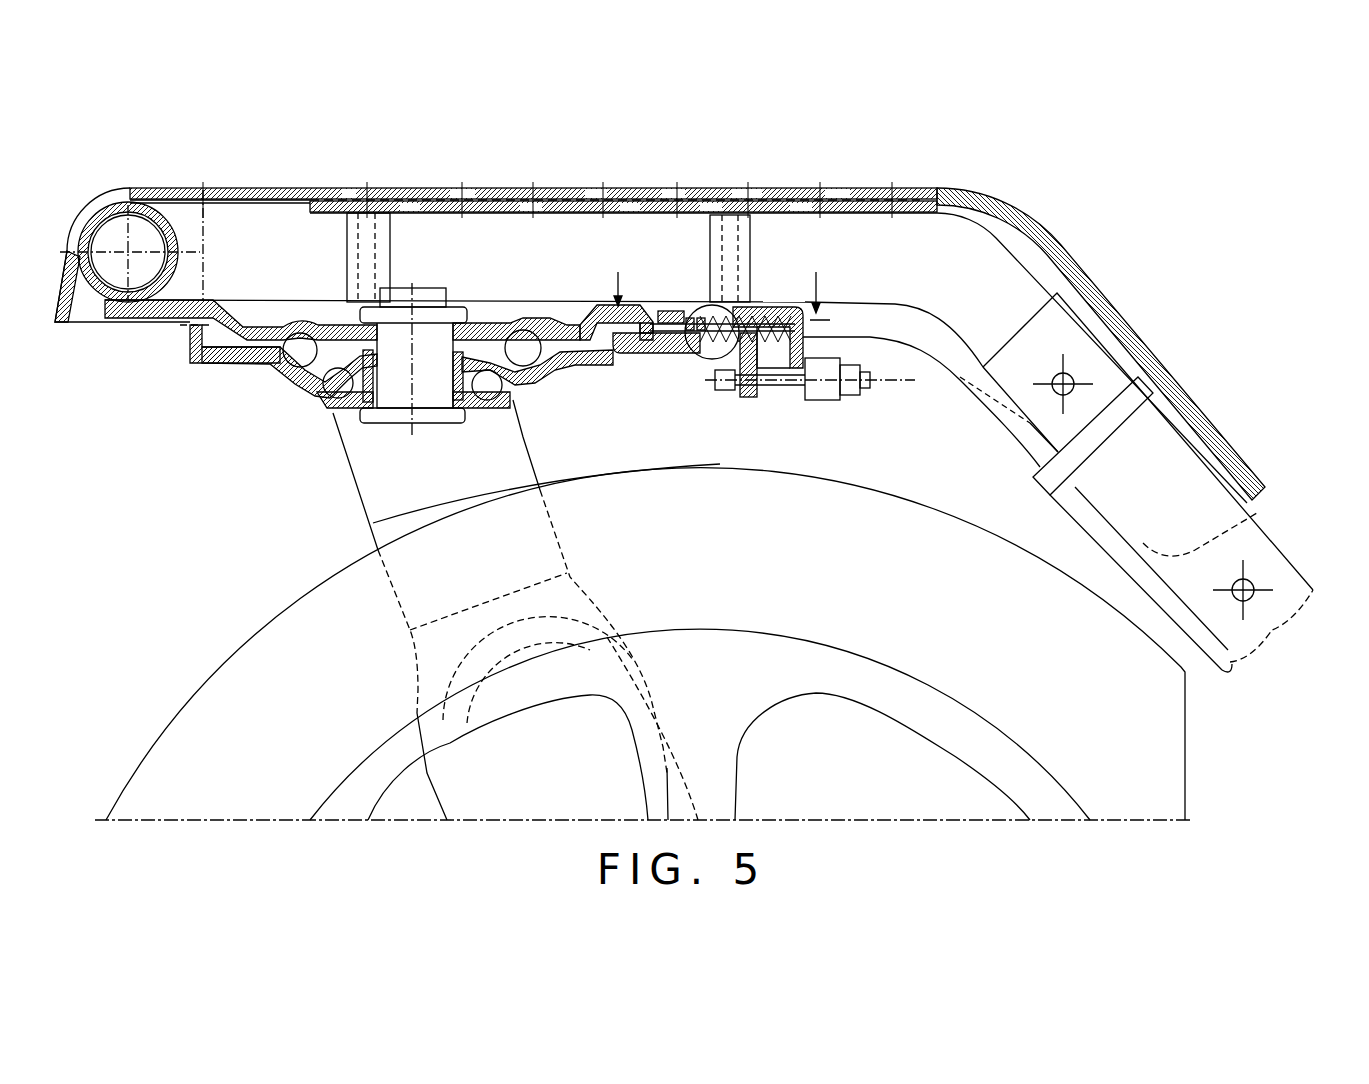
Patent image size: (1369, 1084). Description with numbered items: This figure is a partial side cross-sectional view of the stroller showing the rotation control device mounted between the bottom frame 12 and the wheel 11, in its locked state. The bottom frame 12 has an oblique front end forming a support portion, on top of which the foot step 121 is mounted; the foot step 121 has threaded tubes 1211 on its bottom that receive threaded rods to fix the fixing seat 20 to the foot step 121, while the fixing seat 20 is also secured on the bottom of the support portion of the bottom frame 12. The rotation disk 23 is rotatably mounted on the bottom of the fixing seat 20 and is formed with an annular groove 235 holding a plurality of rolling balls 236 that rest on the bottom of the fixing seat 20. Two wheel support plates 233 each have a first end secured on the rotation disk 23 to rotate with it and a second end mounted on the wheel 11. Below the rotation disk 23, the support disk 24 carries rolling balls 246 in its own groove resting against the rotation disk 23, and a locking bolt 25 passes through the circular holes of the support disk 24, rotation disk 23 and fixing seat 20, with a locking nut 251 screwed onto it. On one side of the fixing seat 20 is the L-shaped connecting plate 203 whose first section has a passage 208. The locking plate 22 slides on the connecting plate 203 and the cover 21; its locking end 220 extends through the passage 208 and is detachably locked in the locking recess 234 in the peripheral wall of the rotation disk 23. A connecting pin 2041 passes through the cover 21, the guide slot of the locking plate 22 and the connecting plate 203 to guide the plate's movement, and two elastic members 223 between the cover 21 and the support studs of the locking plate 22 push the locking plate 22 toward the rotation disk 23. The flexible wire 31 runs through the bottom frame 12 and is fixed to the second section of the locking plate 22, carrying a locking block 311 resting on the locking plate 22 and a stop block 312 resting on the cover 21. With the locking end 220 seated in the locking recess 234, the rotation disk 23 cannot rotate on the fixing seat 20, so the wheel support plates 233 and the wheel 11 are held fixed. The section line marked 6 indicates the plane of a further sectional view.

The wheel 11 is at (217, 735).
The bottom frame 12 is at (1023, 297).
The foot step 121 is at (1140, 345).
The threaded tubes 1211 is at (380, 243).
The fixing seat 20 is at (238, 301).
The cover 21 is at (777, 307).
The locking plate 22 is at (748, 357).
The locking end 220 is at (590, 312).
The elastic members 223 is at (865, 338).
The rotation disk 23 is at (190, 336).
The wheel support plates 233 is at (378, 494).
The locking recess 234 is at (620, 357).
The annular groove 235 is at (250, 357).
The rolling balls 236 is at (300, 350).
The support disk 24 is at (336, 386).
The rolling balls 246 is at (315, 397).
The locking bolt 25 is at (390, 417).
The locking nut 251 is at (457, 310).
The connecting plate 203 is at (685, 342).
The connecting pin 2041 is at (700, 357).
The passage 208 is at (660, 322).
The flexible wire 31 is at (1170, 597).
The locking block 311 is at (735, 375).
The stop block 312 is at (823, 395).
The section line 6 is at (718, 280).